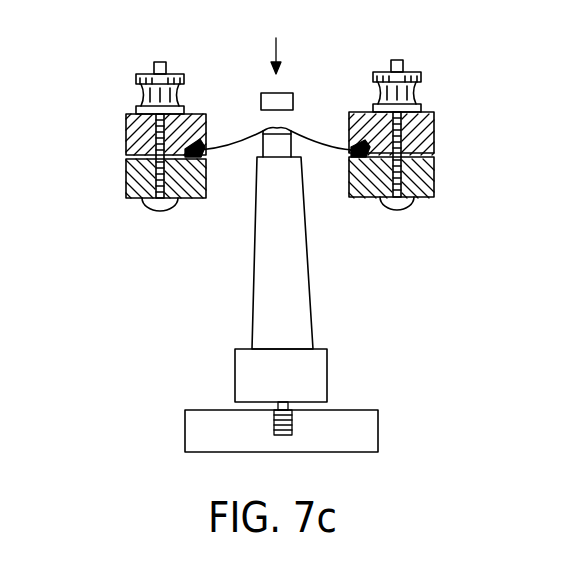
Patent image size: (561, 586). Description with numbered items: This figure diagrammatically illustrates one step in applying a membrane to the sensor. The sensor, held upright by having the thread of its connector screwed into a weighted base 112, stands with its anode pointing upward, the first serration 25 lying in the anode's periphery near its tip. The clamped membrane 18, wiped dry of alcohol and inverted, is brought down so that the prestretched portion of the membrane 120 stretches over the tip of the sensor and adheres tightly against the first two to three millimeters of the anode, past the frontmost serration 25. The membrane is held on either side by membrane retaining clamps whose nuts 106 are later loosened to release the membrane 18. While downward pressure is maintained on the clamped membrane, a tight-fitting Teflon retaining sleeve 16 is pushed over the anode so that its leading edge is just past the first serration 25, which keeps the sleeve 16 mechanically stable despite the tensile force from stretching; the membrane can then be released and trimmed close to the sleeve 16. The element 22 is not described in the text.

The retaining sleeve 16 is at (265, 93).
The clamped membrane 18 is at (330, 152).
The support column 22 is at (297, 296).
The first serration 25 is at (237, 173).
The nuts 106 is at (141, 96).
The weighted base 112 is at (352, 441).
The prestretched portion of the membrane 120 is at (256, 128).